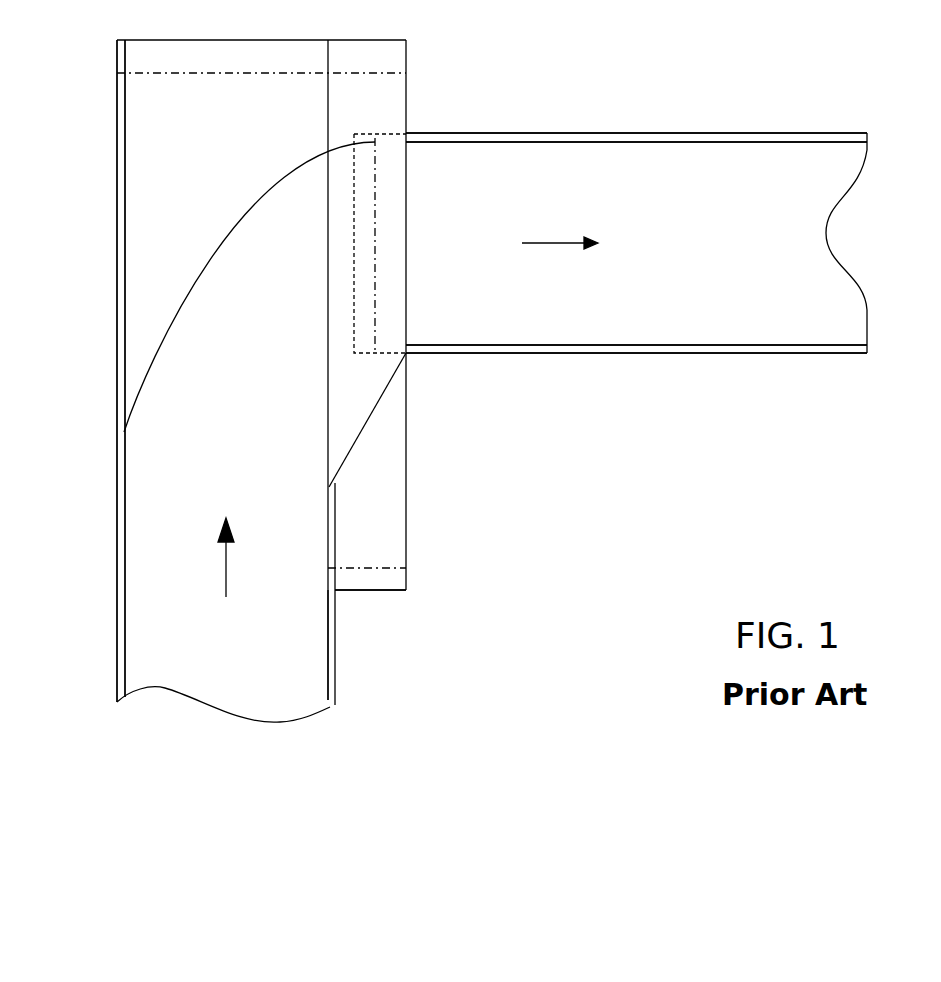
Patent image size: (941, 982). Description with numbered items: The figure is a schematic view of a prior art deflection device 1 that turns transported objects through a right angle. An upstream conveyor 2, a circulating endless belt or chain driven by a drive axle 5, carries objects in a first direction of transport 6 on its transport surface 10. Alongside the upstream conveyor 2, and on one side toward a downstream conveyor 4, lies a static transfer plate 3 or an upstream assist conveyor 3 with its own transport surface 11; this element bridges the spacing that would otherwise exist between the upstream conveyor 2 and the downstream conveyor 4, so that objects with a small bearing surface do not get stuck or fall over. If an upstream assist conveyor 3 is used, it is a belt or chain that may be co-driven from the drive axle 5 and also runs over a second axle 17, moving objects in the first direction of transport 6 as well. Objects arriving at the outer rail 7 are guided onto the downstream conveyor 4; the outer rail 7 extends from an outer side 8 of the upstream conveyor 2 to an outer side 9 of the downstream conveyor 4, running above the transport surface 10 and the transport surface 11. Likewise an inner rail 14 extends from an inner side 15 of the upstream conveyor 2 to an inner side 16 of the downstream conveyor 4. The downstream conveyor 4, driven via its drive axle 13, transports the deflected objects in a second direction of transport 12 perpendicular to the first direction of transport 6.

The deflection device 1 is at (851, 52).
The upstream conveyor 2 is at (195, 697).
The transfer plate or upstream assist conveyor 3 is at (406, 590).
The downstream conveyor 4 is at (870, 305).
The drive axle 5 is at (387, 73).
The first direction of transport 6 is at (236, 557).
The outer rail 7 is at (200, 277).
The outer side of the upstream conveyor 8 is at (116, 390).
The outer side of the downstream conveyor 9 is at (727, 133).
The transport surface of the upstream conveyor 10 is at (146, 555).
The transport surface of the transfer plate or upstream assist conveyor 11 is at (393, 487).
The second direction of transport 12 is at (560, 259).
The drive axle of the downstream conveyor 13 is at (375, 310).
The inner rail 14 is at (363, 430).
The inner side of the upstream conveyor 15 is at (338, 655).
The inner side of the downstream conveyor 16 is at (633, 355).
The second axle 17 is at (372, 568).